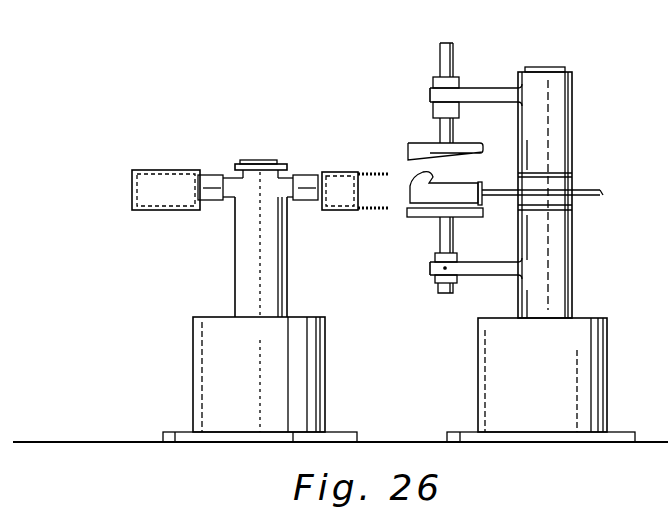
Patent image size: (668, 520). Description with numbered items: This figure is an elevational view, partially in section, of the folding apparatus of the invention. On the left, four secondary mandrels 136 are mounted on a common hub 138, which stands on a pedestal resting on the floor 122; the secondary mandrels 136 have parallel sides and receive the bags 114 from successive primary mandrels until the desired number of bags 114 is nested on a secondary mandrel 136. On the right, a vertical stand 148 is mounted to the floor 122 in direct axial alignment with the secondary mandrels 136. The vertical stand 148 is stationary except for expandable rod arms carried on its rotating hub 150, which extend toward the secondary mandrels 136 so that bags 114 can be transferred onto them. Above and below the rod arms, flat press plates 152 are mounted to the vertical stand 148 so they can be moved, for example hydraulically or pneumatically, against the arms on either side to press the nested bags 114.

The bags 114 is at (408, 198).
The floor 122 is at (393, 440).
The secondary mandrels 136 is at (131, 181).
The common hub 138 is at (262, 161).
The vertical stand 148 is at (573, 260).
The rotating hub 150 is at (572, 184).
The flat press plates 152 is at (467, 153).